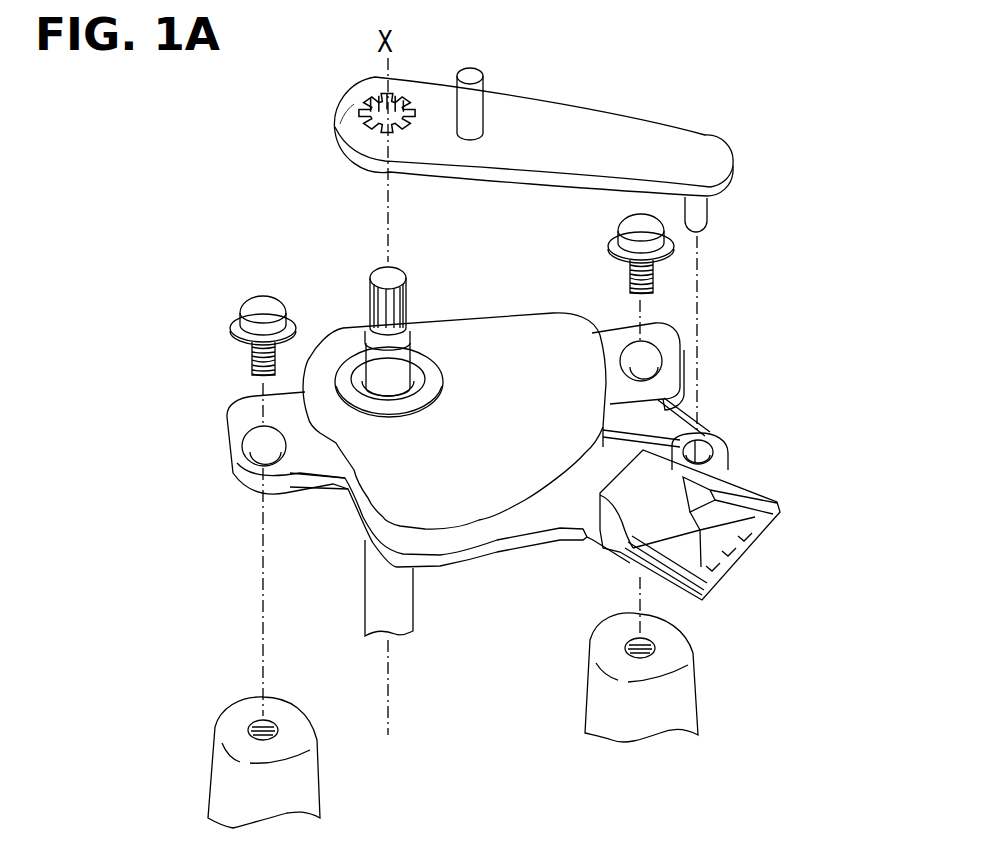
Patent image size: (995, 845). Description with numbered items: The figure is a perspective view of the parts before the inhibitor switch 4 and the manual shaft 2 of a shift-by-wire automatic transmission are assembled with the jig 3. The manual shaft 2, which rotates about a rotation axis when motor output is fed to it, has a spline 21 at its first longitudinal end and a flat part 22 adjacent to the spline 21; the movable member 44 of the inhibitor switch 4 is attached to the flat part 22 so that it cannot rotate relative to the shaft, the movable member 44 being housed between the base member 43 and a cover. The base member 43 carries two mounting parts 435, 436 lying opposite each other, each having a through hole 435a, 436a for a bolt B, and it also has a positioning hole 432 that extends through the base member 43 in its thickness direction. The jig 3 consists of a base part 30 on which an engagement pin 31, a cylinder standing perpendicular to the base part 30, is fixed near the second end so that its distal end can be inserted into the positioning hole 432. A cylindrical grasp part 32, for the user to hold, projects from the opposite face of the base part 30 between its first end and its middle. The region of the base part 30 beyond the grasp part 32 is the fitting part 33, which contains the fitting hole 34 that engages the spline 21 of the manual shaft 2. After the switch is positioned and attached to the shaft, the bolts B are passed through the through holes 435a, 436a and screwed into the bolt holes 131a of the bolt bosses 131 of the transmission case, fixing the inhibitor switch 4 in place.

The manual shaft 2 is at (420, 438).
The spline 21 is at (394, 276).
The flat part 22 is at (400, 368).
The jig 3 is at (522, 124).
The base part 30 is at (548, 116).
The engagement pin 31 is at (700, 210).
The grasp part 32 is at (470, 76).
The fitting part 33 is at (340, 141).
The fitting hole 34 is at (366, 101).
The inhibitor switch 4 is at (483, 463).
The base member 43 is at (537, 540).
The movable member 44 is at (494, 522).
The positioning hole 432 is at (768, 484).
The mounting part 435 is at (234, 461).
The through hole 435a is at (255, 452).
The mounting part 436 is at (688, 358).
The through hole 436a is at (648, 361).
The bolt boss 131 is at (453, 720).
The bolt hole 131a is at (255, 723).
The bolt B is at (263, 306).